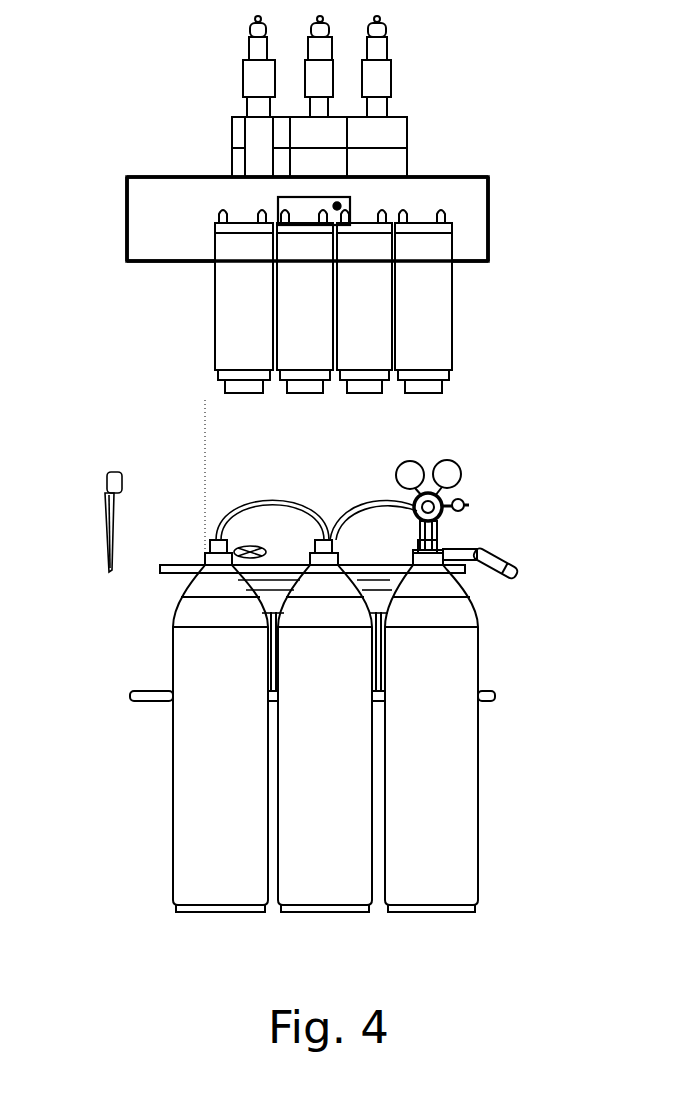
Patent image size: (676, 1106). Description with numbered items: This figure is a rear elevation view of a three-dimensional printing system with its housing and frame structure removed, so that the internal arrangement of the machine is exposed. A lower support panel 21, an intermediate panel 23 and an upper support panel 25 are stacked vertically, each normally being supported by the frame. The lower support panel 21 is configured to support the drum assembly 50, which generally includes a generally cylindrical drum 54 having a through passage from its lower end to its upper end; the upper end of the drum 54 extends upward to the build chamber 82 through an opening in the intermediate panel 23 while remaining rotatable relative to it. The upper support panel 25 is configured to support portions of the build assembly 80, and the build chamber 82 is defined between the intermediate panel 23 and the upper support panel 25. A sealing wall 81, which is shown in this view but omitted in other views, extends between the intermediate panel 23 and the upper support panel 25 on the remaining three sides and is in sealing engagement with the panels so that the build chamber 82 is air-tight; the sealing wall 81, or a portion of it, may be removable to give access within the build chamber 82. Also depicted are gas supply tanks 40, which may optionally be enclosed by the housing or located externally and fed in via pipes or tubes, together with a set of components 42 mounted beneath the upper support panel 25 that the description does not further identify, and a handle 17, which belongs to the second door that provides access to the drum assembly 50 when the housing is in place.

The handle 17 is at (102, 515).
The lower support panel 21 is at (482, 690).
The intermediate panel 23 is at (488, 250).
The upper support panel 25 is at (468, 177).
The gas supply tanks 40 is at (452, 772).
The cartridge 42 is at (442, 297).
The drum assembly 50 is at (422, 447).
The drum 54 is at (205, 433).
The build assembly 80 is at (422, 156).
The sealing wall 81 is at (127, 218).
The build chamber 82 is at (153, 203).